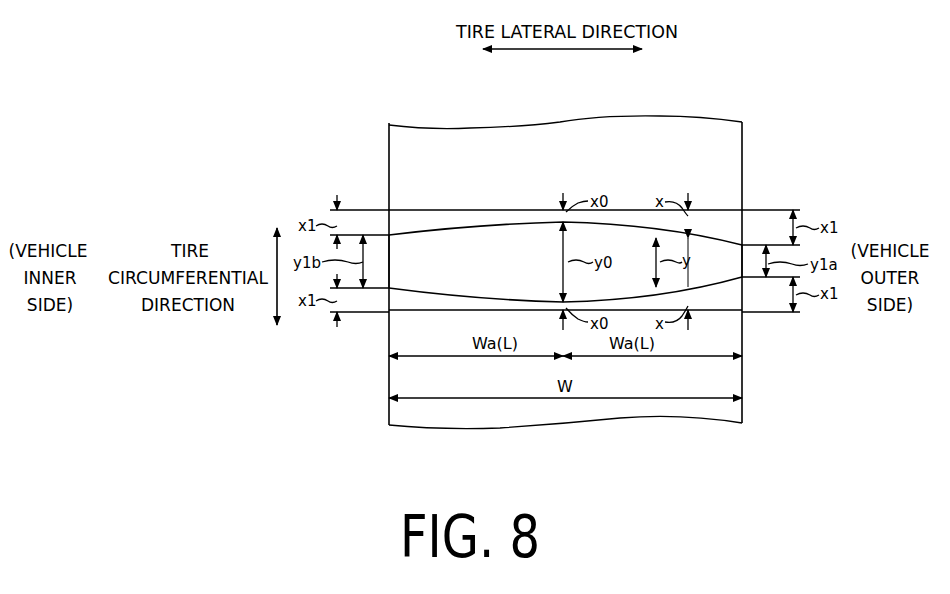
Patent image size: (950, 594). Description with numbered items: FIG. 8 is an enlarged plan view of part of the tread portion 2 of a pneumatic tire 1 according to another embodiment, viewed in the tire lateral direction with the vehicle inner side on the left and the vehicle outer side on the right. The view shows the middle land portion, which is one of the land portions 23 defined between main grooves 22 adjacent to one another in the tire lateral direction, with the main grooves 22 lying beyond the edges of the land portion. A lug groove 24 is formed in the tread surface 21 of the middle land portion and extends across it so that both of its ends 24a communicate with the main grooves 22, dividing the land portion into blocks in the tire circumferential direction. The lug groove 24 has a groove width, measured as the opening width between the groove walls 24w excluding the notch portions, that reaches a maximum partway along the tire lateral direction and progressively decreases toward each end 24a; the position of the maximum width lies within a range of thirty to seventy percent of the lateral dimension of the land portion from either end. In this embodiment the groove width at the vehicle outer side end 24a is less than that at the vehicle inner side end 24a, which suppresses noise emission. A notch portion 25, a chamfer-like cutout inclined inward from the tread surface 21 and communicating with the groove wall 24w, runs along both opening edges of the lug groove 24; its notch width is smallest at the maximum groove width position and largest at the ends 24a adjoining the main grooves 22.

The pneumatic tire 1 is at (740, 73).
The tread portion 2 is at (462, 127).
The tread surface 21 is at (503, 128).
The main groove 22 is at (570, 294).
The land portion 23 is at (589, 125).
The lug groove 24 is at (565, 262).
The end of lug groove 24a is at (389, 260).
The groove wall 24w is at (480, 218).
The notch portion 25 is at (410, 217).